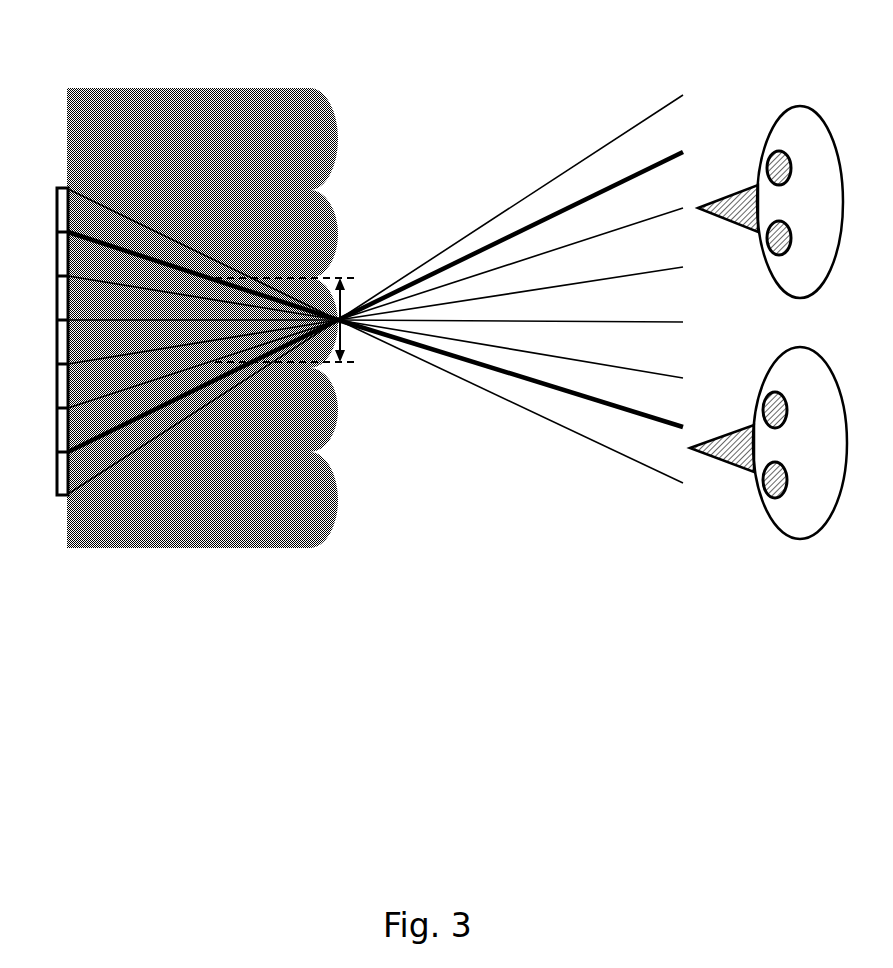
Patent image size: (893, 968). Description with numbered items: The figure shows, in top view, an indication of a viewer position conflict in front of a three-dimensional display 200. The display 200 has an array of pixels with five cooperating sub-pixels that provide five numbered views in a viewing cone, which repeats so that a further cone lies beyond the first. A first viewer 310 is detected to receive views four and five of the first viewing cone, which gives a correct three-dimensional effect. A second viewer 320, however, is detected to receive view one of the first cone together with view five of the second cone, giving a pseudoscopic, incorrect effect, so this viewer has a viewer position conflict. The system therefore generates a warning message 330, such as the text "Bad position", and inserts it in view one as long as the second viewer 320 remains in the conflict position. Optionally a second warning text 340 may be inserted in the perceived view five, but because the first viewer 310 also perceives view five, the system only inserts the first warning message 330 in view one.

The 3D display 200 is at (178, 88).
The first viewer 310 is at (797, 108).
The second viewer 320 is at (800, 542).
The warning message 330 is at (566, 378).
The second warning text 340 is at (640, 450).